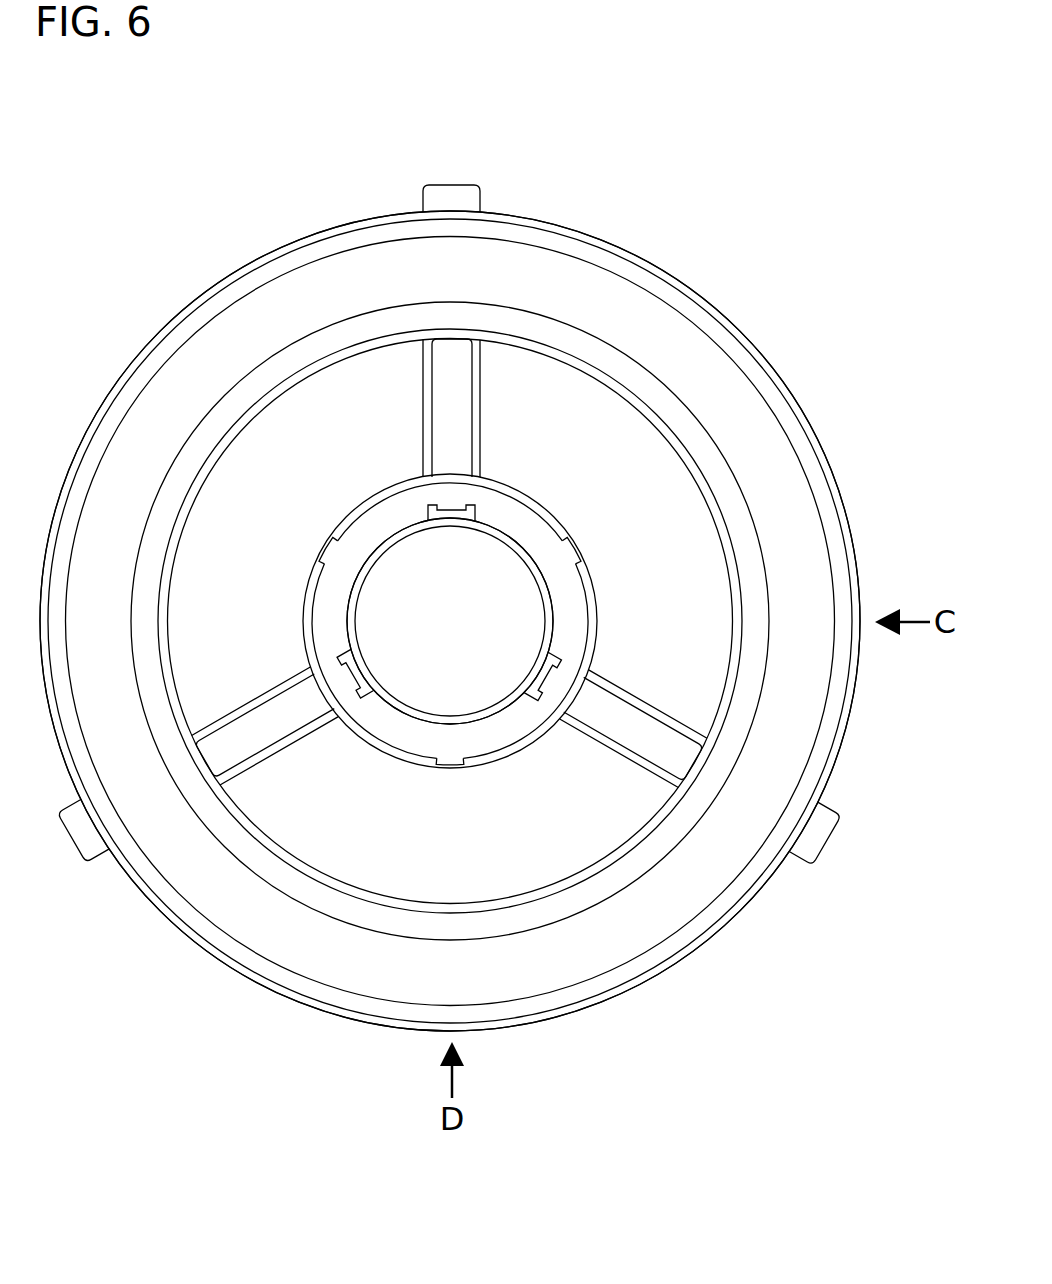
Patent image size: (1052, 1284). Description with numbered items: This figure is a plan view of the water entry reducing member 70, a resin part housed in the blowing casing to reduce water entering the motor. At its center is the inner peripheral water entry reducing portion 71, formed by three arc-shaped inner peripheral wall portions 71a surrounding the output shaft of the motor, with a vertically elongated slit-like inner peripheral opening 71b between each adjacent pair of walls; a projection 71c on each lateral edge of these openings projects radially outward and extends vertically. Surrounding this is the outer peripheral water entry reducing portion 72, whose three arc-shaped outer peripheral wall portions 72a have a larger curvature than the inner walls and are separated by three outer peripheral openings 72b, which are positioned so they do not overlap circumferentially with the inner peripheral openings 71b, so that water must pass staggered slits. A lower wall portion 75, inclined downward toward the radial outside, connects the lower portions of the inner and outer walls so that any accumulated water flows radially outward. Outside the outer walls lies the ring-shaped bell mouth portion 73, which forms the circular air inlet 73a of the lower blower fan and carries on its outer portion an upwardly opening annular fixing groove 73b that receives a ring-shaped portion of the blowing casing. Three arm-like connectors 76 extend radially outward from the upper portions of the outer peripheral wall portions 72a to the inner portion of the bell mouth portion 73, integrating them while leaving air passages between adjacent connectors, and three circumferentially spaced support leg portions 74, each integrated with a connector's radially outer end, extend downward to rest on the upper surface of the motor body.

The water entry reducing member 70 is at (724, 311).
The inner peripheral water entry reducing portion 71 is at (450, 648).
The inner peripheral wall portion 71a is at (341, 620).
The inner peripheral opening 71b is at (455, 522).
The projection 71c is at (473, 508).
The outer peripheral water entry reducing portion 72 is at (459, 640).
The outer peripheral wall portion 72a is at (407, 492).
The outer peripheral opening 72b is at (334, 541).
The bell mouth portion 73 is at (299, 300).
The air inlet 73a is at (565, 366).
The fixing groove 73b is at (806, 436).
The support leg portion 74 is at (456, 183).
The lower wall portion 75 is at (542, 528).
The connector 76 is at (481, 386).